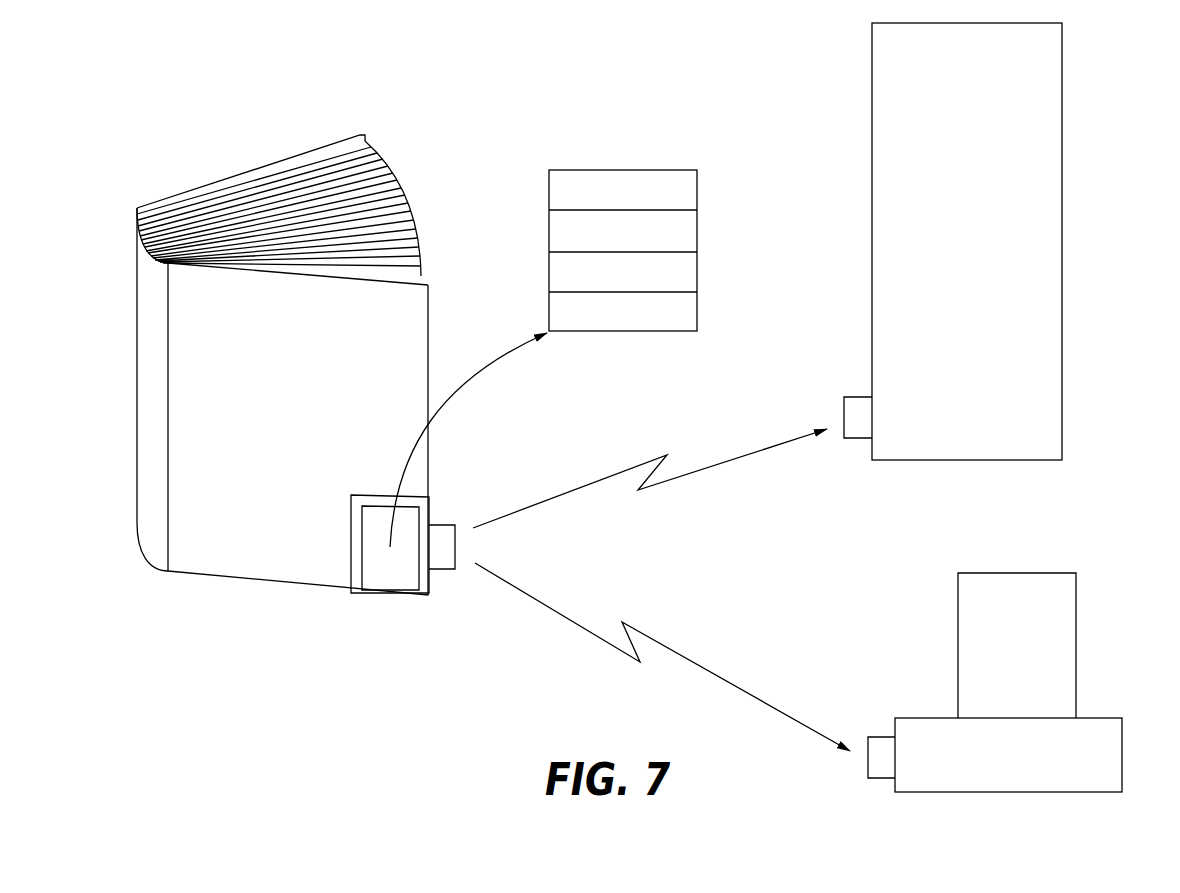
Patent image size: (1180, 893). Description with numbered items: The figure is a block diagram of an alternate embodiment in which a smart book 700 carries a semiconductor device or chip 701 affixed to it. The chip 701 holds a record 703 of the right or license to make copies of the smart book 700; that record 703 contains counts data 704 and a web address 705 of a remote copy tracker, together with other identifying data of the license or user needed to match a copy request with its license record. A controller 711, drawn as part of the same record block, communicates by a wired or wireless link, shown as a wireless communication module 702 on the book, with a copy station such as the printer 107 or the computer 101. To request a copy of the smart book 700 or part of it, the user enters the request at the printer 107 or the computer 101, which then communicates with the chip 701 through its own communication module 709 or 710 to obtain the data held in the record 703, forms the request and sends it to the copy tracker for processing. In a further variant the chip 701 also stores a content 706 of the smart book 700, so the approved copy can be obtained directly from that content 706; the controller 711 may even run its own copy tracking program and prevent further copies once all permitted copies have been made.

The smart book 700 is at (258, 584).
The chip 701 is at (392, 577).
The chip 702 is at (456, 547).
The record 703 is at (590, 317).
The counts data 704 is at (682, 190).
The web address 705 is at (688, 230).
The content 706 is at (680, 273).
The controller 711 is at (687, 310).
The printer 107 is at (872, 50).
The communication module 709 is at (844, 405).
The computer 101 is at (958, 625).
The communication module 710 is at (880, 737).